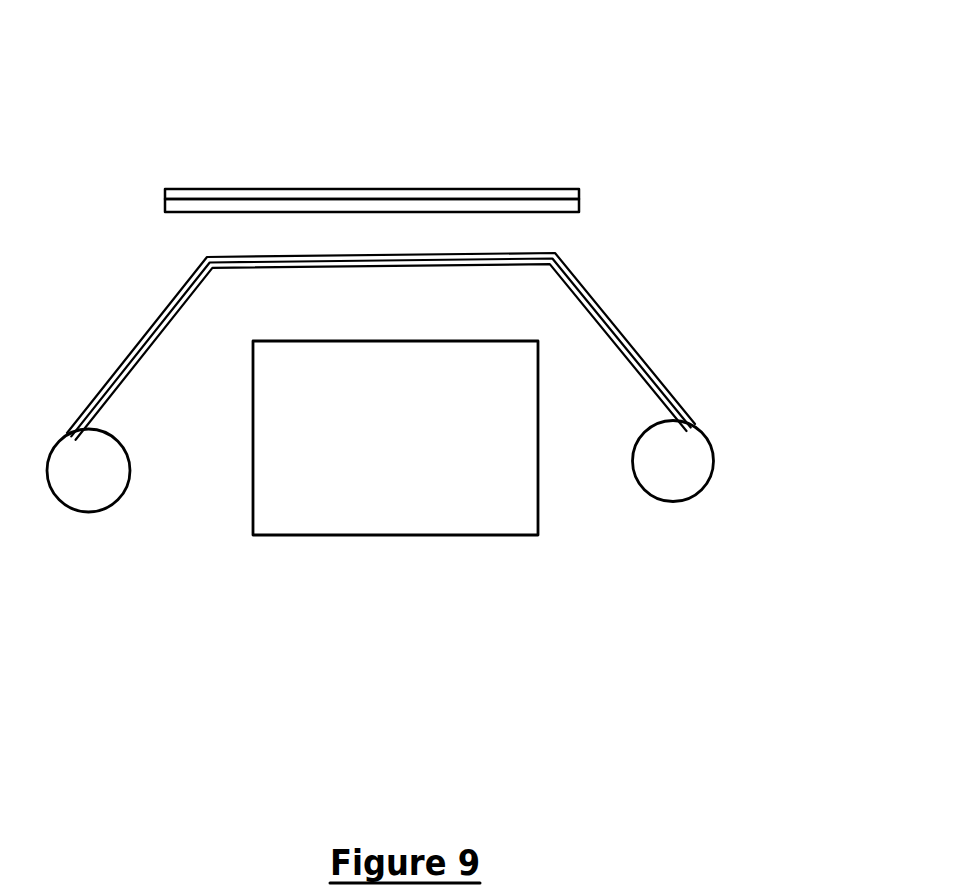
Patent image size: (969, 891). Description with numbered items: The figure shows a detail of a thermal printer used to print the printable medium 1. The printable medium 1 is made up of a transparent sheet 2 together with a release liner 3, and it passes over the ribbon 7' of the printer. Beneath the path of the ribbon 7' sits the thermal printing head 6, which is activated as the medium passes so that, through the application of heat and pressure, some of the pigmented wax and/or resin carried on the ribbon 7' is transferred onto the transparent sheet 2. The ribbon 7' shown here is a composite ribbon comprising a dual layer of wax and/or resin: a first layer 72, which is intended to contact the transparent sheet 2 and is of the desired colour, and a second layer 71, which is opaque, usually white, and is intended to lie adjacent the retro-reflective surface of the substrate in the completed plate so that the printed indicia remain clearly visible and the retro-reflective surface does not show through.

The printable medium 1 is at (229, 190).
The transparent sheet 2 is at (220, 207).
The release liner 3 is at (352, 189).
The thermal printing head 6 is at (404, 458).
The ribbon 7' is at (433, 379).
The second layer 71 is at (617, 343).
The first layer 72 is at (587, 283).